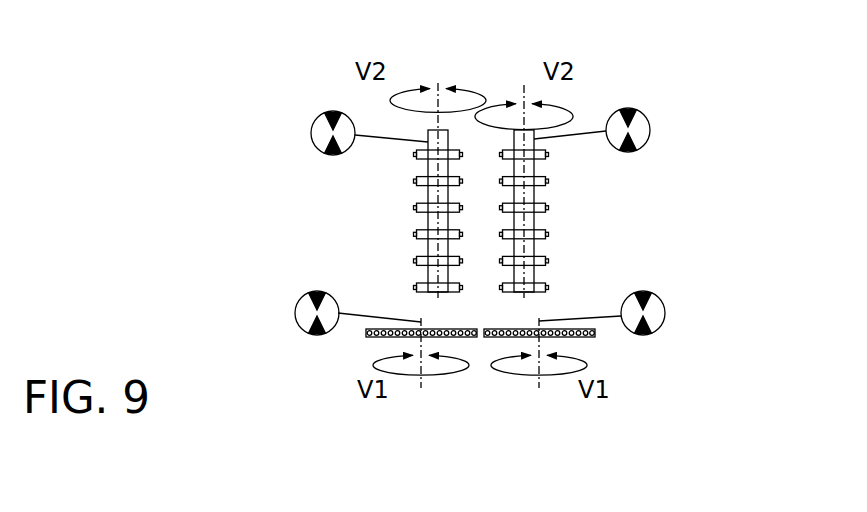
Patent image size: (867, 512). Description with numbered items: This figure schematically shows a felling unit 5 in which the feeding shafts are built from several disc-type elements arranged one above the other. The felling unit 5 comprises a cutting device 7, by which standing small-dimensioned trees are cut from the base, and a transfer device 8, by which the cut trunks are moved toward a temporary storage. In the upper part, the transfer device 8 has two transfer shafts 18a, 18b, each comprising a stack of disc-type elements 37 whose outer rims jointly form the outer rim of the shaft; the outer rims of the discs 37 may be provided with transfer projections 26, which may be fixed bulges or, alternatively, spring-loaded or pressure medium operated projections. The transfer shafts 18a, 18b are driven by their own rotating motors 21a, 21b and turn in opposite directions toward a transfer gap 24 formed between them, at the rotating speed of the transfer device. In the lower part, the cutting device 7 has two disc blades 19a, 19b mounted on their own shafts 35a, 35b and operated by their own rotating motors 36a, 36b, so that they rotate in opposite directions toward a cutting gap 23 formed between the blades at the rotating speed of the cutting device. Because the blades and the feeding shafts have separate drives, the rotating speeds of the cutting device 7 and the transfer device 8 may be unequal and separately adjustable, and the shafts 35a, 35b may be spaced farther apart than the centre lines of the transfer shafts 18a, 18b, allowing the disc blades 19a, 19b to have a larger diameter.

The felling unit 5 is at (628, 67).
The cutting device 7 is at (696, 352).
The transfer device 8 is at (648, 198).
The transfer shaft 18a is at (426, 247).
The transfer shaft 18b is at (536, 272).
The disc blade 19a is at (373, 336).
The disc blade 19b is at (590, 337).
The rotating motor 21a is at (333, 133).
The rotating motor 21b is at (638, 128).
The cutting gap 23 is at (483, 346).
The transfer gap 24 is at (487, 204).
The transfer projections 26 is at (549, 154).
The shaft 35a is at (420, 387).
The shaft 35b is at (540, 387).
The rotating motor 36a is at (307, 312).
The rotating motor 36b is at (650, 313).
The disc-type element 37 is at (549, 181).